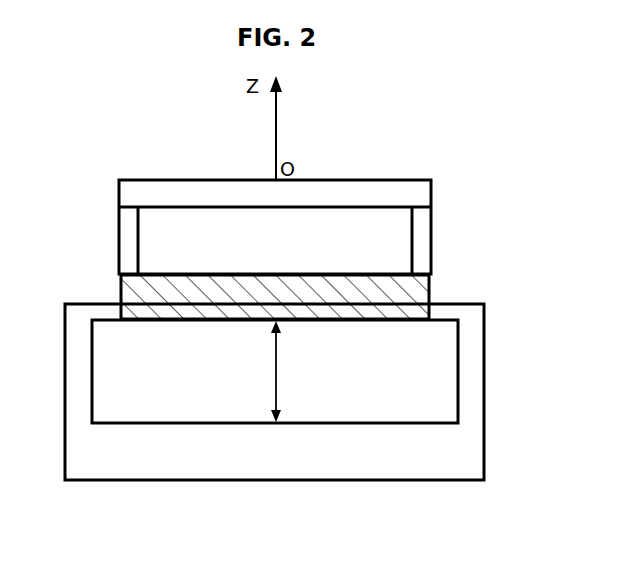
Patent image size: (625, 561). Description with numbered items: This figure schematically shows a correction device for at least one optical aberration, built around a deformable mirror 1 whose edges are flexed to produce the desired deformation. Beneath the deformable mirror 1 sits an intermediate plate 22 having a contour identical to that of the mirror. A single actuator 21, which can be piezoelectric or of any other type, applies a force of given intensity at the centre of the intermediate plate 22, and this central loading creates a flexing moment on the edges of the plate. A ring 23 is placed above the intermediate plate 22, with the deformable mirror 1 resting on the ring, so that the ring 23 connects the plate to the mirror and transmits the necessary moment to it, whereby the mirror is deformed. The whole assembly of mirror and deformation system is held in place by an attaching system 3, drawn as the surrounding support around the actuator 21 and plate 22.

The deformable mirror 1 is at (343, 196).
The attaching system 3 is at (471, 378).
The single actuator 21 is at (278, 379).
The intermediate plate 22 is at (340, 277).
The ring 23 is at (421, 240).